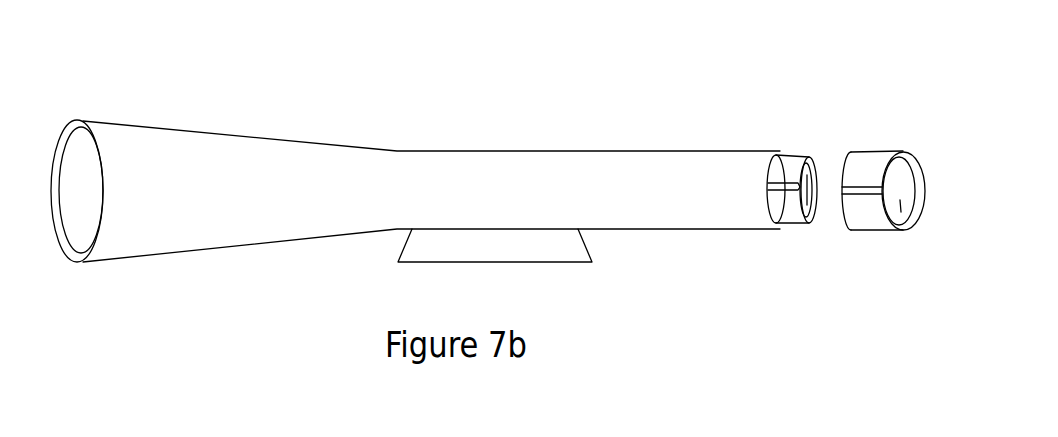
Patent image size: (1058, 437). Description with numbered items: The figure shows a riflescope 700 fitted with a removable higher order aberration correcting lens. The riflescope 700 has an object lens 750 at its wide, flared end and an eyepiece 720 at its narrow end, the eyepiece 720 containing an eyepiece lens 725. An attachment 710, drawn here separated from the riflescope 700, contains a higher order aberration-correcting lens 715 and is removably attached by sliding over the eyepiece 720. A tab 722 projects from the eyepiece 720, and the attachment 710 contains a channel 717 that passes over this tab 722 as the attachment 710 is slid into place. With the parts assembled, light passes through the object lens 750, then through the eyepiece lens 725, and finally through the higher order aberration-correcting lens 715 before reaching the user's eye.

The riflescope 700 is at (542, 117).
The object lens 750 is at (73, 152).
The eyepiece 720 is at (792, 158).
The tab 722 is at (780, 183).
The eyepiece lens 725 is at (807, 202).
The attachment 710 is at (875, 148).
The channel 717 is at (860, 193).
The higher order aberration-correcting lens 715 is at (900, 212).